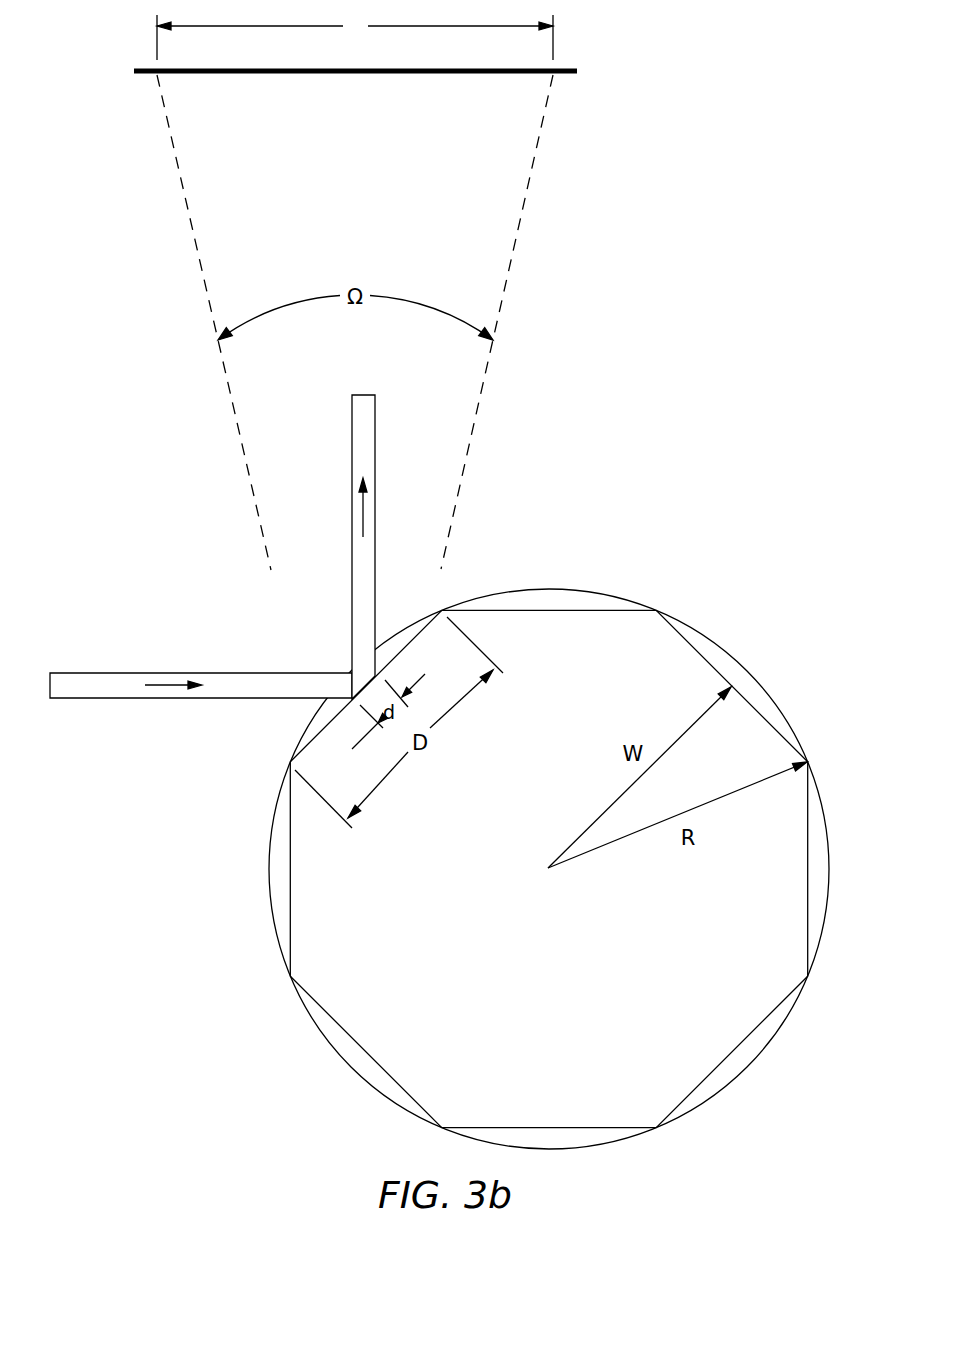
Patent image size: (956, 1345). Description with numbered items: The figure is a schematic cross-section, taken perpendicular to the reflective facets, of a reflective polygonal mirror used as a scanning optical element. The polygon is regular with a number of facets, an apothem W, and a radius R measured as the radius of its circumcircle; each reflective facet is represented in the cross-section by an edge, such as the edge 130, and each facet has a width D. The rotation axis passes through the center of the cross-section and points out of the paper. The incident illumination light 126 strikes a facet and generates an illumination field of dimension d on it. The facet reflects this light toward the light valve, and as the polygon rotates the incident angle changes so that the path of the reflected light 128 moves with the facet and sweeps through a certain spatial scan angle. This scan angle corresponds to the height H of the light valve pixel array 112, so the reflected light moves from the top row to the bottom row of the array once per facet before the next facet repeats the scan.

The light valve pixel array 112 is at (301, 76).
The incident illumination light 126 is at (102, 673).
The reflected light 128 is at (352, 444).
The edge 130 is at (403, 643).